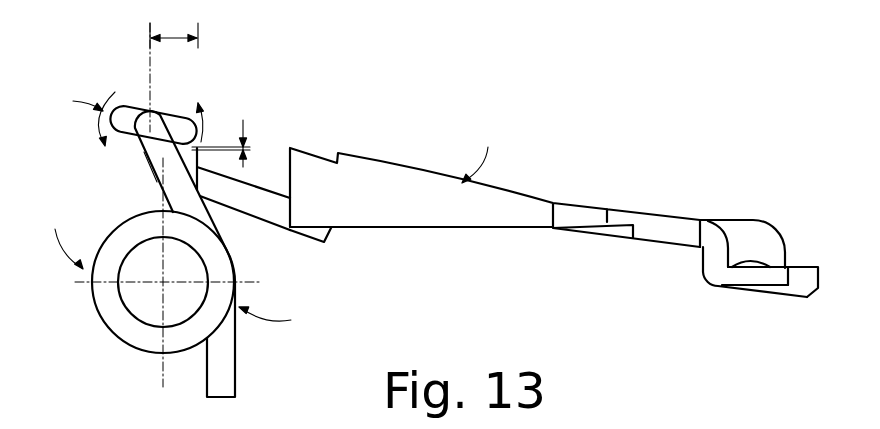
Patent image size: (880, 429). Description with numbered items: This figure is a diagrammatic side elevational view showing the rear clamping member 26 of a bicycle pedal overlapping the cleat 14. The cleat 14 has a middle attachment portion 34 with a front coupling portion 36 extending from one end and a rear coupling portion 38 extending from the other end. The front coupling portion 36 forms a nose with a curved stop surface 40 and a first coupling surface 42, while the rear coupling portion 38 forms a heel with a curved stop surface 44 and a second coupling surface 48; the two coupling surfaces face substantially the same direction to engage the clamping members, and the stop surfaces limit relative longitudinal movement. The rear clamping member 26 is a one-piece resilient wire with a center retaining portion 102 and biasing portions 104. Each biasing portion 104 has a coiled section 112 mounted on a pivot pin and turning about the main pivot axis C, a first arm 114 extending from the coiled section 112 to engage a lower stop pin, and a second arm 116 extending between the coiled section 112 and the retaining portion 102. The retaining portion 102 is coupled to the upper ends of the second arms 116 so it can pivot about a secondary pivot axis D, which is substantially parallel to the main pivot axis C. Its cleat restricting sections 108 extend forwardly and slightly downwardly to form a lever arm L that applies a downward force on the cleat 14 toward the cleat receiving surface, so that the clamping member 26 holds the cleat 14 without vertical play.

The cleat 14 is at (495, 183).
The rear clamping member 26 is at (135, 277).
The middle attachment portion 34 is at (470, 228).
The front coupling portion 36 is at (735, 219).
The rear coupling portion 38 is at (143, 167).
The curved stop surface 40 is at (785, 240).
The first coupling surface 42 is at (728, 270).
The curved stop surface 44 is at (140, 150).
The second coupling surface 48 is at (186, 113).
The retaining portion 102 is at (65, 100).
The biasing portion 104 is at (292, 320).
The cleat restricting section 108 is at (181, 132).
The coiled section 112 is at (101, 317).
The first arm 114 is at (236, 365).
The second arm 116 is at (198, 192).
The lever arm L is at (178, 37).
The secondary pivot axis D is at (148, 108).
The main pivot axis C is at (165, 284).